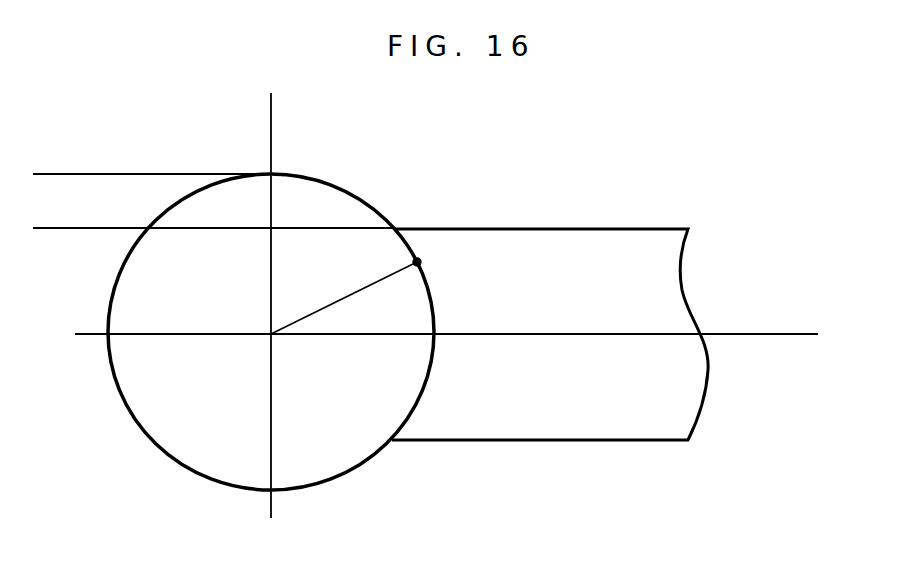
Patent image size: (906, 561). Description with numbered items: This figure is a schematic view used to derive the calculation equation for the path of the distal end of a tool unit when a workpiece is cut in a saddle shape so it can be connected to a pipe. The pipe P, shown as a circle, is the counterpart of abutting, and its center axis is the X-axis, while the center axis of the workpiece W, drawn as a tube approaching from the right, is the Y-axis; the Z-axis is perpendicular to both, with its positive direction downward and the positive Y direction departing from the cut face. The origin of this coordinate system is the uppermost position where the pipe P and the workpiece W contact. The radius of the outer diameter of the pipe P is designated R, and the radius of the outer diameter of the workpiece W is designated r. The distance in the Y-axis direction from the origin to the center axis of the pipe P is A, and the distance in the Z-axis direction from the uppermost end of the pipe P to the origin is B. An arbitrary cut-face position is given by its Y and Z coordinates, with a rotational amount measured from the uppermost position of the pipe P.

The pipe P is at (318, 487).
The workpiece W is at (566, 441).
The distance A is at (395, 122).
The distance B is at (76, 174).
The radius of outer diameter of the pipe R is at (346, 296).
The radius of outer diameter of the workpiece r is at (643, 232).